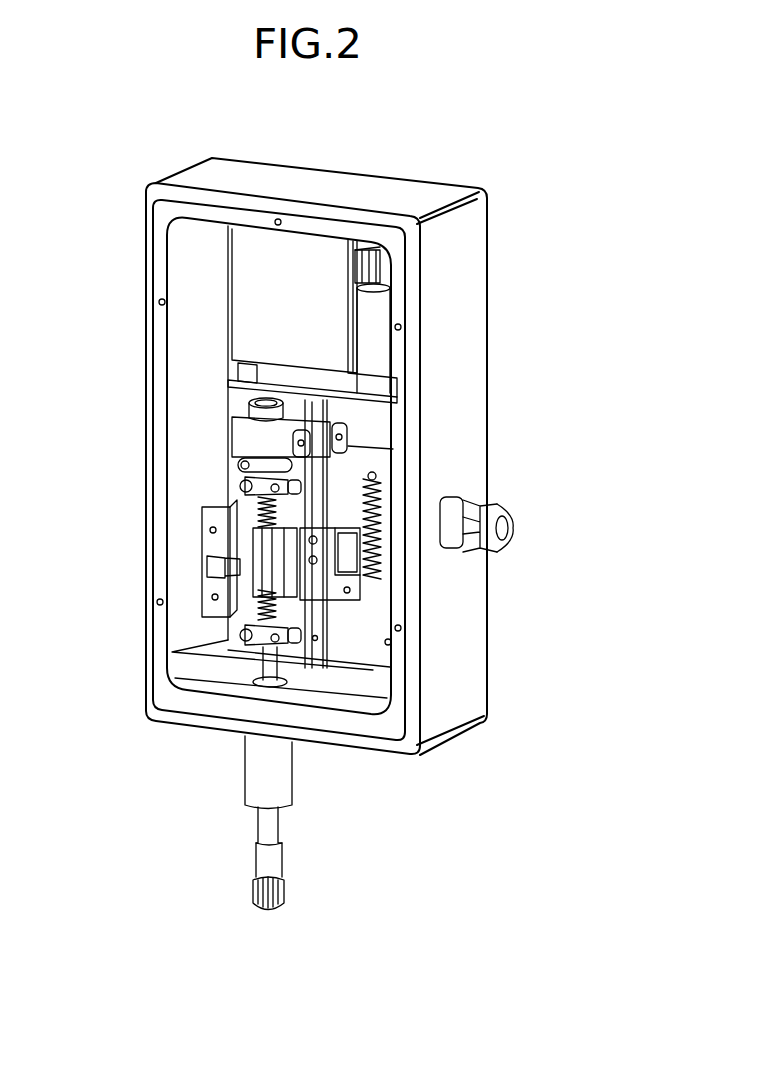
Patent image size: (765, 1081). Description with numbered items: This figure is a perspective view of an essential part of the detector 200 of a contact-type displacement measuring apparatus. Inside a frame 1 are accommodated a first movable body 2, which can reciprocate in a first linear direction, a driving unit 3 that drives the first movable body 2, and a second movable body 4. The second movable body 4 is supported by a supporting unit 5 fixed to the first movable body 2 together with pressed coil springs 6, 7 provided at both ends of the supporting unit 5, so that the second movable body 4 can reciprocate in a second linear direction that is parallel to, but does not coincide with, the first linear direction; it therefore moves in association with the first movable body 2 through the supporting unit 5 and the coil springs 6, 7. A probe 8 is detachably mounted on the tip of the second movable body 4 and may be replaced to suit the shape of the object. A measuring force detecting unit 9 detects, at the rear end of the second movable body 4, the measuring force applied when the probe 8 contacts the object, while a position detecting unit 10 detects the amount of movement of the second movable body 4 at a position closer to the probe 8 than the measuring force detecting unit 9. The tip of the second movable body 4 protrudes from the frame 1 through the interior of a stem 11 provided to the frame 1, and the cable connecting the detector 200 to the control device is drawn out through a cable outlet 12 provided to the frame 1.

The detector 200 is at (342, 162).
The frame 1 is at (475, 233).
The first movable body 2 is at (322, 472).
The driving unit 3 is at (243, 333).
The second movable body 4 is at (253, 661).
The supporting unit 5 is at (263, 540).
The pressed coil spring 6 is at (243, 620).
The pressed coil spring 7 is at (240, 503).
The probe 8 is at (285, 897).
The measuring force detecting unit 9 is at (240, 461).
The position detecting unit 10 is at (207, 565).
The stem 11 is at (255, 780).
The cable outlet 12 is at (512, 527).